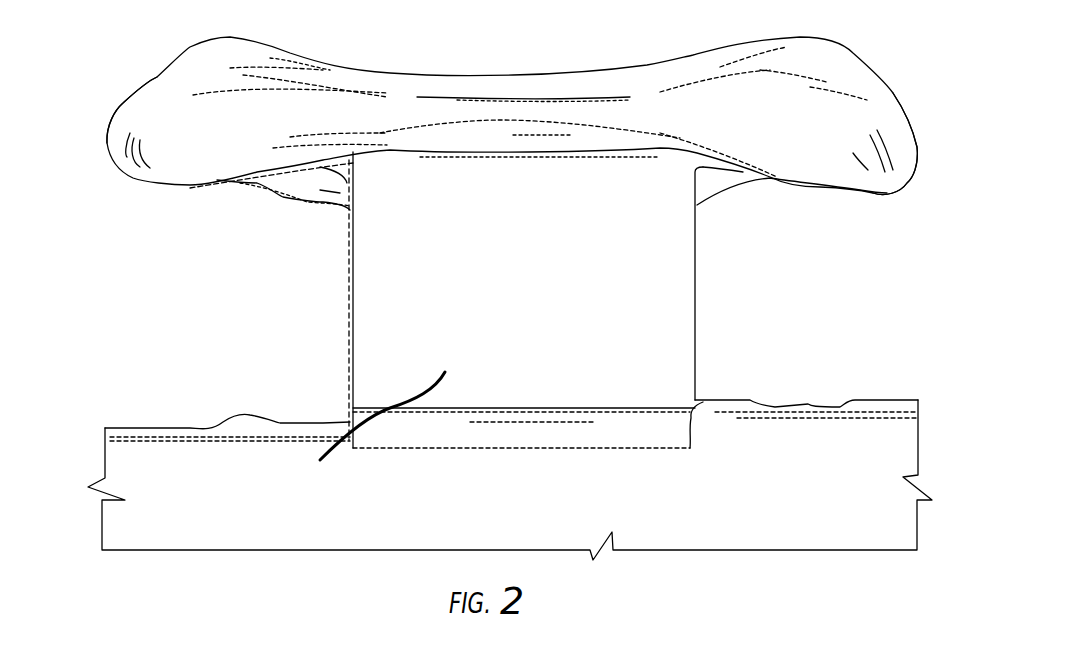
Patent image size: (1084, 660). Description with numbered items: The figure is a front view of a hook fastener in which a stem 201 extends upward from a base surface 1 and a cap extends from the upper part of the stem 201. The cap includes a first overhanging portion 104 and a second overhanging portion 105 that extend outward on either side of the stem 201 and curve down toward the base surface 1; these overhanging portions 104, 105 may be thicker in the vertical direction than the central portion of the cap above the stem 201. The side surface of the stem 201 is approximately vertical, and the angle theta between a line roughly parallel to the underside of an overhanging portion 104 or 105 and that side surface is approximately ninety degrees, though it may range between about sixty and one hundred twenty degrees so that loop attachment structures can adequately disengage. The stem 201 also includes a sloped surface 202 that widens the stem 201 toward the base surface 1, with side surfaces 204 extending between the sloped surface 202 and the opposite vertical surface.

The base surface 1 is at (208, 432).
The first overhanging portion 104 is at (877, 160).
The second overhanging portion 105 is at (165, 155).
The stem 201 is at (535, 360).
The sloped surface 202 is at (373, 434).
The side surfaces 204 is at (350, 313).
The angle θ theta is at (348, 227).